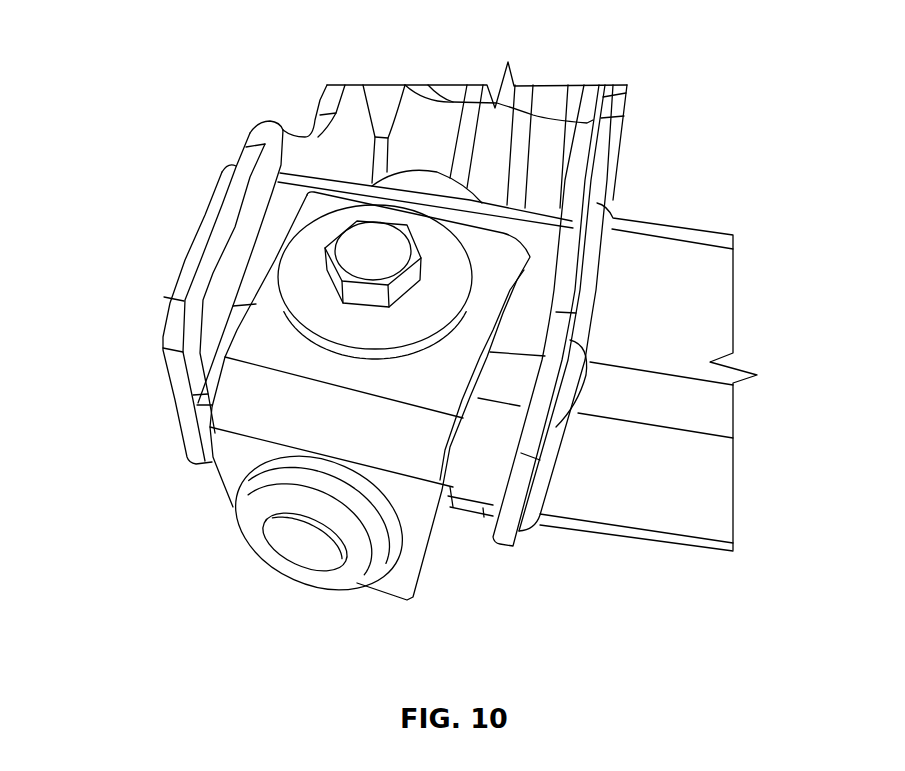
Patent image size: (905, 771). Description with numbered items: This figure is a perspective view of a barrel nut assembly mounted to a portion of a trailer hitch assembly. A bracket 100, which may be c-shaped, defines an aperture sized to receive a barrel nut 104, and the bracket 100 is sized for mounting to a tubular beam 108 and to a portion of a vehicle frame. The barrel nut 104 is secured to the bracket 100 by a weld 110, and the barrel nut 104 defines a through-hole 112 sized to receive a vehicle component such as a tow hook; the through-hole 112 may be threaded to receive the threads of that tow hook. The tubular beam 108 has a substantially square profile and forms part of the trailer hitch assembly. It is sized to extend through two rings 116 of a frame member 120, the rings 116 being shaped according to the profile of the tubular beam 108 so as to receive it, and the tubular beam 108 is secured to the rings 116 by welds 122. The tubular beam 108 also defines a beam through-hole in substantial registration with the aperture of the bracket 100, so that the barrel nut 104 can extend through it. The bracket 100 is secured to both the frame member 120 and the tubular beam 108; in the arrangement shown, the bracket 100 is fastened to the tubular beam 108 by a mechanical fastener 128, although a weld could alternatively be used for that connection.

The bracket 100 is at (228, 457).
The barrel nut 104 is at (224, 551).
The tubular beam 108 is at (588, 500).
The weld 110 is at (318, 554).
The through-hole 112 is at (292, 558).
The rings 116 is at (200, 300).
The frame member 120 is at (570, 108).
The welds 122 is at (523, 532).
The mechanical fastener 128 is at (288, 322).